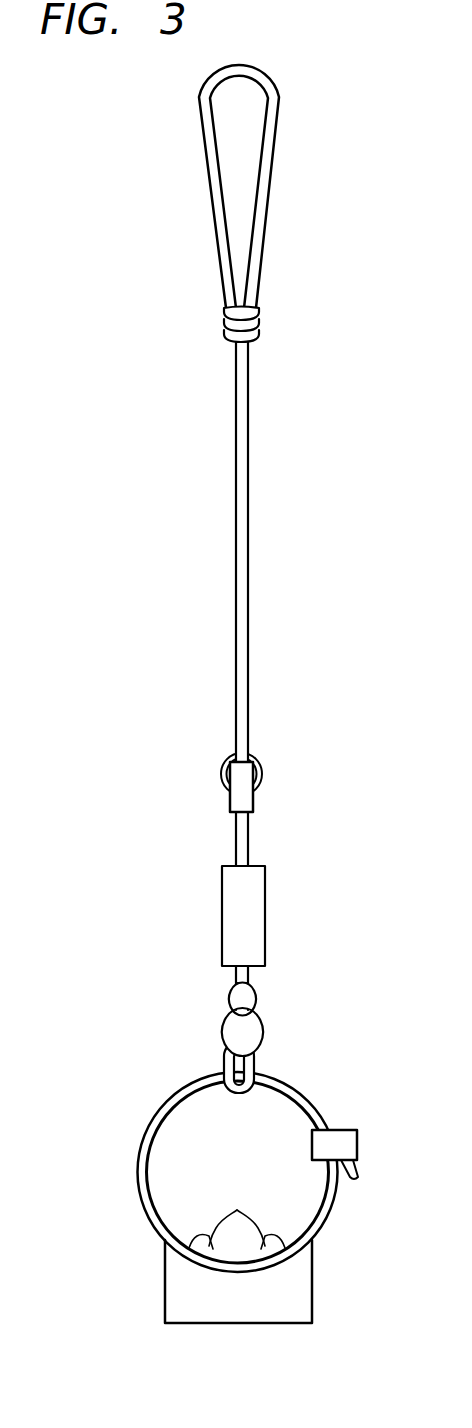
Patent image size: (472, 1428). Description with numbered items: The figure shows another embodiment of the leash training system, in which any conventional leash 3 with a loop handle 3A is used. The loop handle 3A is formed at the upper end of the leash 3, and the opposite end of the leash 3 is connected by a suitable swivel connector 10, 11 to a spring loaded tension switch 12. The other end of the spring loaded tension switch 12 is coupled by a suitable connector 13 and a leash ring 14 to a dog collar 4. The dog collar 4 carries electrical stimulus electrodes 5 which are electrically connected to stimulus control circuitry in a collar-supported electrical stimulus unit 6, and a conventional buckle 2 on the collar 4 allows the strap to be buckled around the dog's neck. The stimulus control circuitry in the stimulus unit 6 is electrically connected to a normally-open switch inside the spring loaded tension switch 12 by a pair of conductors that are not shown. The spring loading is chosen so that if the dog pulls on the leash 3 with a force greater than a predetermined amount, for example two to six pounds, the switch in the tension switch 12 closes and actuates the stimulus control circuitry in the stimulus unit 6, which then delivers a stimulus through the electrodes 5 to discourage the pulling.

The buckle 2 is at (357, 1145).
The leash 3 is at (231, 676).
The loop handle 3A is at (212, 205).
The dog collar 4 is at (335, 1208).
The electrical stimulus electrodes 5 is at (237, 1210).
The electrical stimulus unit 6 is at (313, 1280).
The swivel connector 10 is at (262, 772).
The swivel connector 11 is at (254, 806).
The spring loaded tension switch 12 is at (222, 915).
The connector 13 is at (263, 1030).
The leash ring 14 is at (224, 1055).